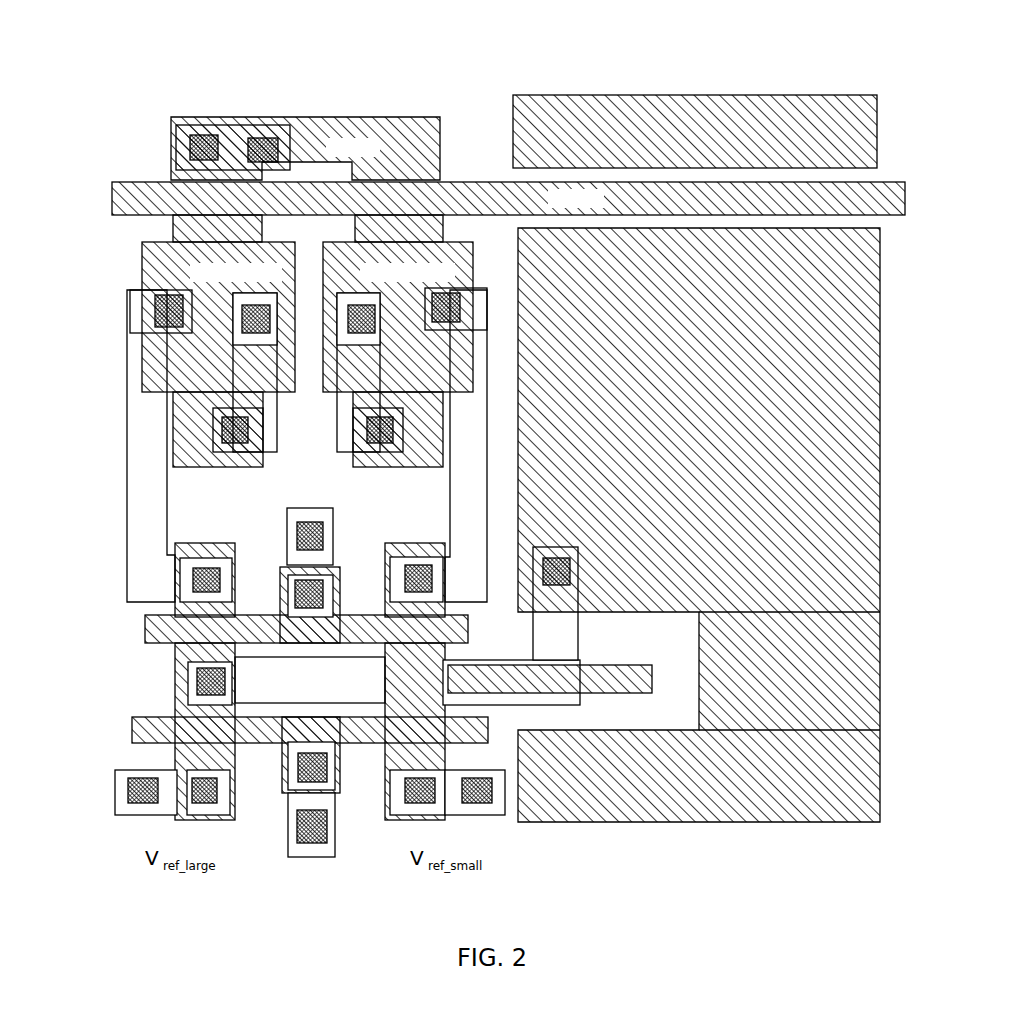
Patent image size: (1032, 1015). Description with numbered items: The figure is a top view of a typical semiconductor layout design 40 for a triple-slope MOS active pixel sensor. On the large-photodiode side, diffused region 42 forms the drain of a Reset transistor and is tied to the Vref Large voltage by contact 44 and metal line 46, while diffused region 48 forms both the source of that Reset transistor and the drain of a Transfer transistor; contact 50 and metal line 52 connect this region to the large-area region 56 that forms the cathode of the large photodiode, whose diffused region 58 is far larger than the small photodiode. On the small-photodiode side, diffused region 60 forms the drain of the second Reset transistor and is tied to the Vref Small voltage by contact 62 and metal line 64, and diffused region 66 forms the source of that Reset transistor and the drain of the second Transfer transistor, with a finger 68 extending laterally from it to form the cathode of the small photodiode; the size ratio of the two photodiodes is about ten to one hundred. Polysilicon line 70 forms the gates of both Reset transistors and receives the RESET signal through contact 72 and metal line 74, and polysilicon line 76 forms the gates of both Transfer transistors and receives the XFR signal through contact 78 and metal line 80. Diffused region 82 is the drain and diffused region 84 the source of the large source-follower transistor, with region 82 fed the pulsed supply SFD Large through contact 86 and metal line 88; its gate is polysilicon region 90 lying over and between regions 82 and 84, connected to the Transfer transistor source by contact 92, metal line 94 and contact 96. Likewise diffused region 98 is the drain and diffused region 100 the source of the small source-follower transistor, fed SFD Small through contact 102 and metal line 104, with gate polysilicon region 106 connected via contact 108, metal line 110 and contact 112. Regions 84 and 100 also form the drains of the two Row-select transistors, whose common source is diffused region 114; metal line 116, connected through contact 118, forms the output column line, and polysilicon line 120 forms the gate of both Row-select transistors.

The semiconductor layout design 40 is at (318, 61).
The diffused region 42 is at (176, 757).
The contact 44 is at (200, 820).
The metal line 46 is at (116, 790).
The diffused region 48 is at (235, 703).
The contact 50 is at (188, 682).
The metal line 52 is at (197, 676).
The large-area region 56 is at (583, 615).
The diffused region 58 is at (665, 615).
The diffused region 60 is at (445, 760).
The contact 62 is at (405, 818).
The metal line 64 is at (472, 818).
The diffused region 66 is at (445, 705).
The finger 68 is at (593, 695).
The polysilicon line 70 is at (132, 732).
The contact 72 is at (286, 775).
The metal line 74 is at (290, 803).
The polysilicon line 76 is at (145, 630).
The contact 78 is at (340, 592).
The metal line 80 is at (335, 540).
The diffused region 82 is at (222, 468).
The diffused region 84 is at (162, 233).
The contact 86 is at (252, 468).
The metal line 88 is at (280, 432).
The polysilicon region 90 is at (142, 268).
The contact 92 is at (193, 580).
The metal line 94 is at (128, 405).
The contact 96 is at (155, 312).
The diffused region 98 is at (420, 468).
The diffused region 100 is at (443, 217).
The contact 102 is at (354, 468).
The metal line 104 is at (338, 440).
The polysilicon region 106 is at (472, 268).
The contact 108 is at (405, 543).
The metal line 110 is at (478, 605).
The contact 112 is at (460, 331).
The diffused region 114 is at (390, 118).
The metal line 116 is at (255, 140).
The contact 118 is at (203, 136).
The polysilicon line 120 is at (172, 182).